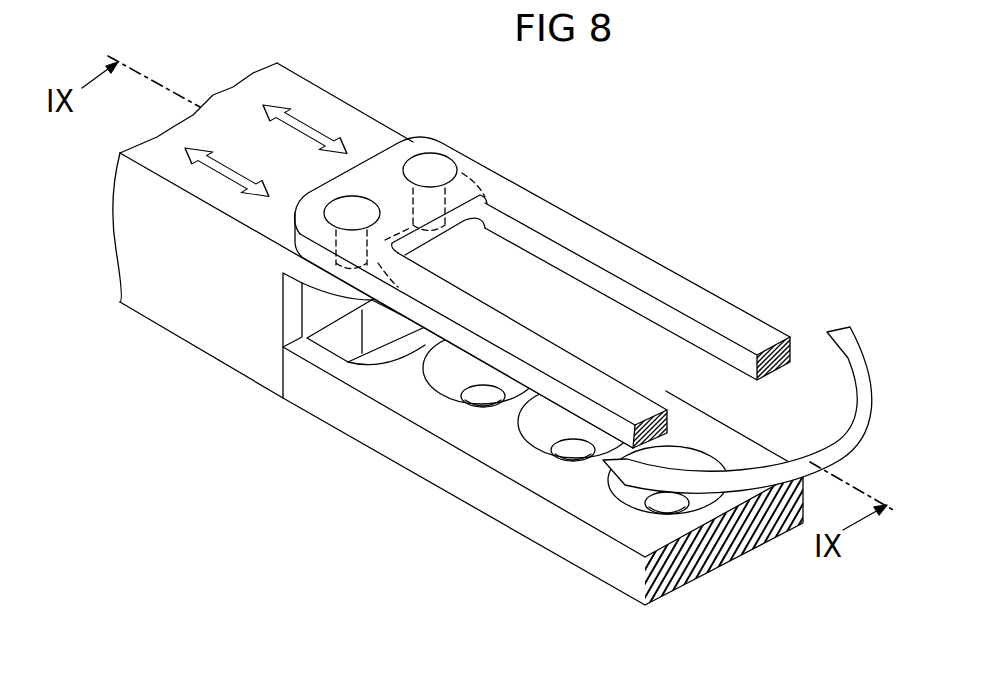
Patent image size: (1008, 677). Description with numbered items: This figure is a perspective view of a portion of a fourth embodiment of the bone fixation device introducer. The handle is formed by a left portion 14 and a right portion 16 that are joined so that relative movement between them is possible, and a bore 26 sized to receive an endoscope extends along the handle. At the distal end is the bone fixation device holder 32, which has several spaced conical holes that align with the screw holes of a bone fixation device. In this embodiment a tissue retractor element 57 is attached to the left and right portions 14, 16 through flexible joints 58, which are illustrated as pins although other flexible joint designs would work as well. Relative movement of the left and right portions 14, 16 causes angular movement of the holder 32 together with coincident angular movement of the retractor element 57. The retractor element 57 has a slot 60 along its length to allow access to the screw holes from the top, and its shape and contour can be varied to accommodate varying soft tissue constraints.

The left portion 14 is at (337, 113).
The right portion 16 is at (202, 310).
The bore 26 is at (348, 320).
The bone fixation device holder 32 is at (450, 478).
The tissue retractor element 57 is at (666, 262).
The flexible joints 58 is at (427, 163).
The slot 60 is at (563, 300).